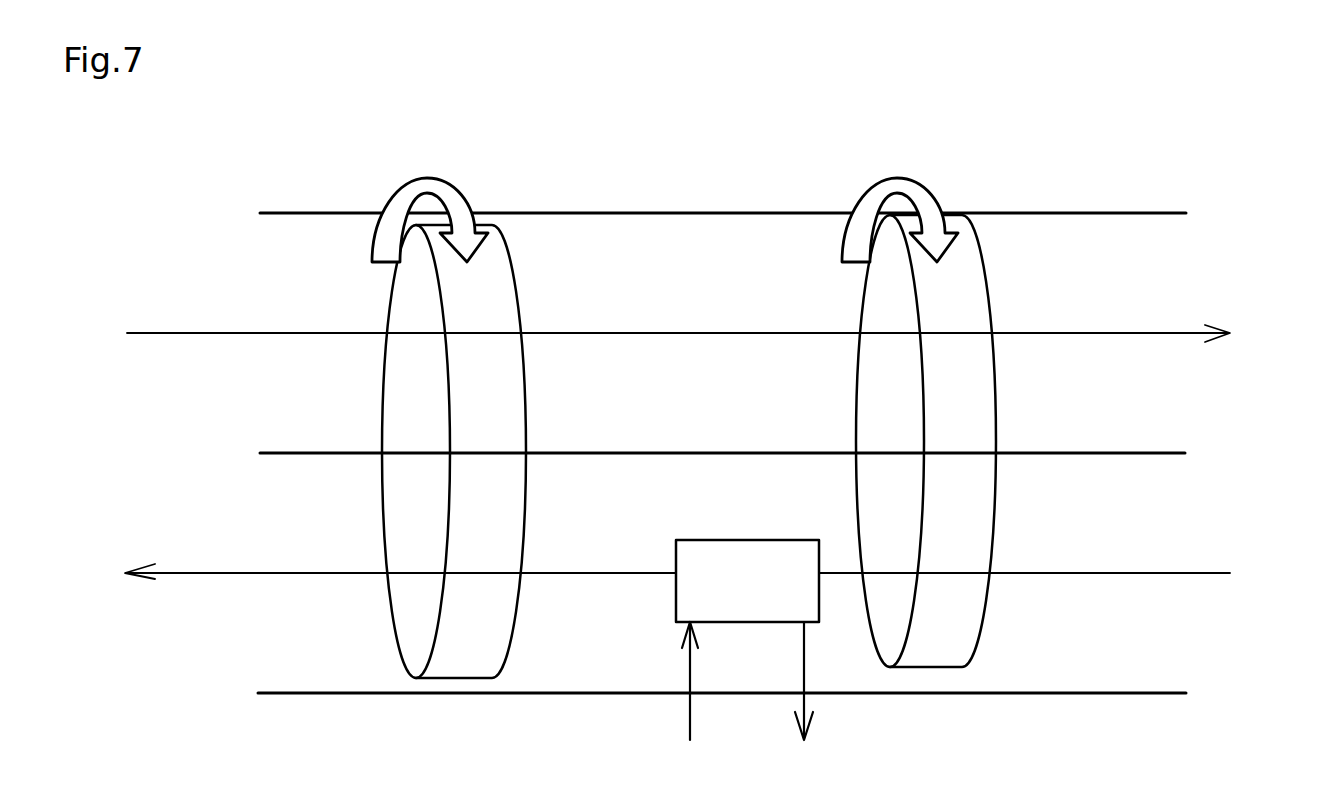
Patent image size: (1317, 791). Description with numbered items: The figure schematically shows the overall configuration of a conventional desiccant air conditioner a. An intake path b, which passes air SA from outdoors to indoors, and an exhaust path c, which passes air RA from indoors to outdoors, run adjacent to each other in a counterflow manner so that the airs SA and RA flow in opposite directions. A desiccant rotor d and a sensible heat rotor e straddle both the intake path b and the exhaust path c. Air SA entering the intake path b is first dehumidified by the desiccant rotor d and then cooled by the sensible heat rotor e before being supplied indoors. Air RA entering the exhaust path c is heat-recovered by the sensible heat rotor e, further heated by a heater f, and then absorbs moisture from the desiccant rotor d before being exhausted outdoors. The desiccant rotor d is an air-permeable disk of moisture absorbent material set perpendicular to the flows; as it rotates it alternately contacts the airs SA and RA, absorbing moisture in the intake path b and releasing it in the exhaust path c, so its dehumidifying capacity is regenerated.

The desiccant air conditioner a is at (337, 115).
The intake path b is at (332, 213).
The exhaust path c is at (322, 693).
The desiccant rotor d is at (497, 287).
The sensible heat rotor e is at (968, 275).
The heater f is at (687, 597).
The air SA is at (648, 335).
The air RA is at (708, 573).